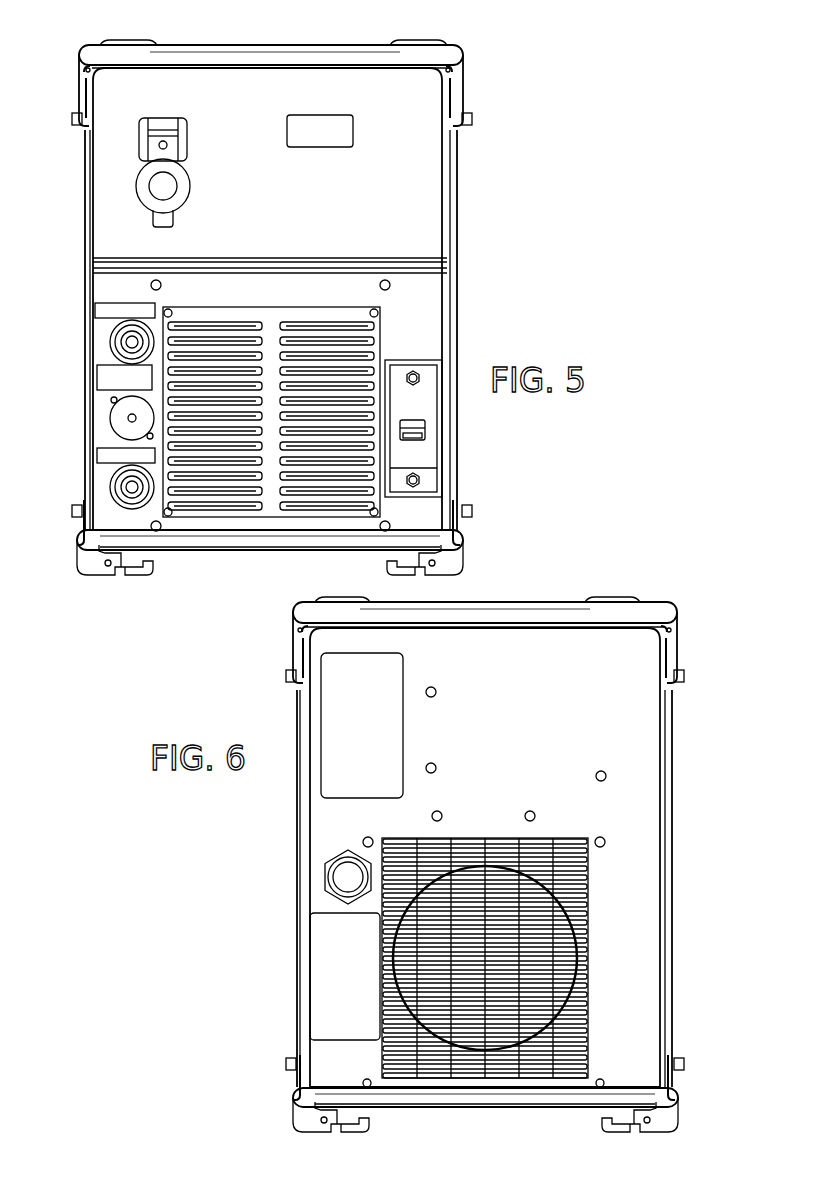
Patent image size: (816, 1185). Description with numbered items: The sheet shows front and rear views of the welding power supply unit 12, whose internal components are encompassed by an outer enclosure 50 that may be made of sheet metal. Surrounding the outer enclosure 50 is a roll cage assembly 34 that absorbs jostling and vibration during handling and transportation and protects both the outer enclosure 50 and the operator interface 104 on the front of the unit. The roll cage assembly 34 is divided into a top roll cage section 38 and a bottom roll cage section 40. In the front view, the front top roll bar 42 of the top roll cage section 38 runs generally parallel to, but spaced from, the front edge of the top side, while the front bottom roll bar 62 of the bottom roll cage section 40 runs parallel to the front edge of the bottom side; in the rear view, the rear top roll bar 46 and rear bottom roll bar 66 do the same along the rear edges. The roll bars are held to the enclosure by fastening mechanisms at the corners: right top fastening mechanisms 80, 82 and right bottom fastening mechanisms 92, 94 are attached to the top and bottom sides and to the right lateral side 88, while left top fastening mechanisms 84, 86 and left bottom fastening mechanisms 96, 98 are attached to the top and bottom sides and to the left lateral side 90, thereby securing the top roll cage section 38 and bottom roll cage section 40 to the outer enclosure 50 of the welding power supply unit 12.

In FIG. 5, the welding power supply unit 12 is at (562, 100).
In FIG. 6, the welding power supply unit 12 is at (735, 592).
In FIG. 5, the roll cage assembly 34 is at (70, 78).
In FIG. 6, the roll cage assembly 34 is at (705, 646).
In FIG. 5, the top roll cage section 38 is at (60, 52).
In FIG. 6, the top roll cage section 38 is at (668, 600).
In FIG. 5, the bottom roll cage section 40 is at (82, 585).
In FIG. 6, the bottom roll cage section 40 is at (682, 1128).
In FIG. 5, the front top roll bar 42 is at (258, 50).
In FIG. 6, the rear top roll bar 46 is at (505, 618).
In FIG. 5, the outer enclosure 50 is at (430, 192).
In FIG. 6, the outer enclosure 50 is at (676, 794).
In FIG. 5, the front bottom roll bar 62 is at (262, 535).
In FIG. 6, the rear bottom roll bar 66 is at (497, 1095).
In FIG. 5, the right top fastening mechanism 80 is at (460, 89).
In FIG. 6, the right top fastening mechanism 82 is at (294, 648).
In FIG. 5, the left top fastening mechanism 84 is at (90, 82).
In FIG. 6, the left top fastening mechanism 86 is at (674, 652).
In FIG. 5, the right lateral side 88 is at (472, 300).
In FIG. 6, the right lateral side 88 is at (288, 812).
In FIG. 5, the left lateral side 90 is at (78, 286).
In FIG. 6, the left lateral side 90 is at (697, 864).
In FIG. 5, the right bottom fastening mechanism 92 is at (456, 532).
In FIG. 6, the right bottom fastening mechanism 94 is at (292, 1090).
In FIG. 5, the left bottom fastening mechanism 96 is at (78, 536).
In FIG. 6, the left bottom fastening mechanism 98 is at (668, 1090).
In FIG. 5, the operator interface 104 is at (344, 210).